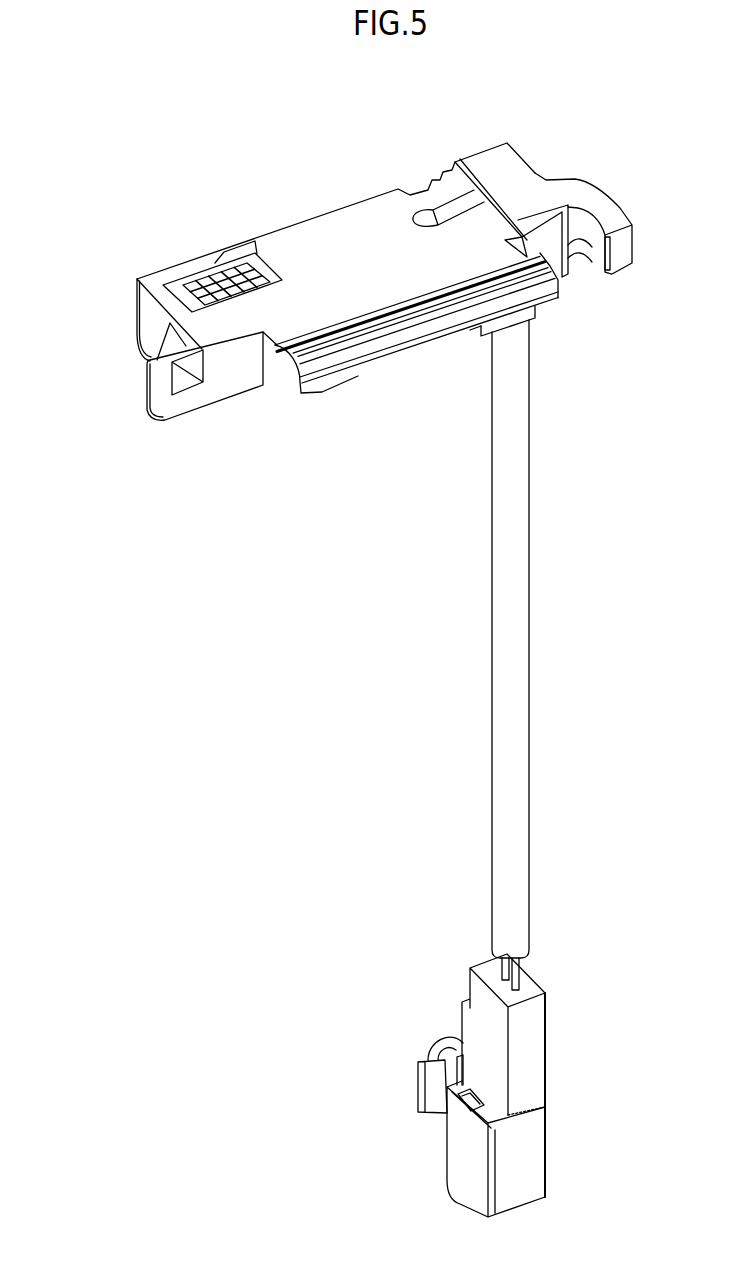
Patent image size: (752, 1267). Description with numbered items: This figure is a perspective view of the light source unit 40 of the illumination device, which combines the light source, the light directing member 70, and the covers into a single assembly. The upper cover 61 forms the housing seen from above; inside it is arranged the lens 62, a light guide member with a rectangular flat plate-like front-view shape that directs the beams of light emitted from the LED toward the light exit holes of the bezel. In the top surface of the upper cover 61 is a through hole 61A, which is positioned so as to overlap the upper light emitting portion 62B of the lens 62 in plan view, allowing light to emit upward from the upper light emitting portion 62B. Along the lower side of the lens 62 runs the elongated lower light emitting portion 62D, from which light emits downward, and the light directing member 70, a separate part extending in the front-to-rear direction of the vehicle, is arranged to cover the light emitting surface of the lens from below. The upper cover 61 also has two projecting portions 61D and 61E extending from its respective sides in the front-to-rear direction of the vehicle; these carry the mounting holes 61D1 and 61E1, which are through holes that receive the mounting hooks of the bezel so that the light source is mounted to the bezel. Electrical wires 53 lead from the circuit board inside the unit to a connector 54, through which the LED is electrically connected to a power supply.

The upper cover 61 is at (375, 215).
The through hole 61A is at (248, 268).
The projecting portion 61D is at (175, 352).
The mounting hole 61D1 is at (178, 397).
The projecting portion 61E is at (607, 208).
The mounting hole 61E1 is at (586, 258).
The lens 62 is at (262, 285).
The upper light emitting portion 62B is at (212, 286).
The lower light emitting portion 62D is at (356, 378).
The light directing member 70 is at (423, 355).
The light source unit 40 is at (604, 337).
The electrical wires 53 is at (520, 465).
The connector 54 is at (533, 1043).